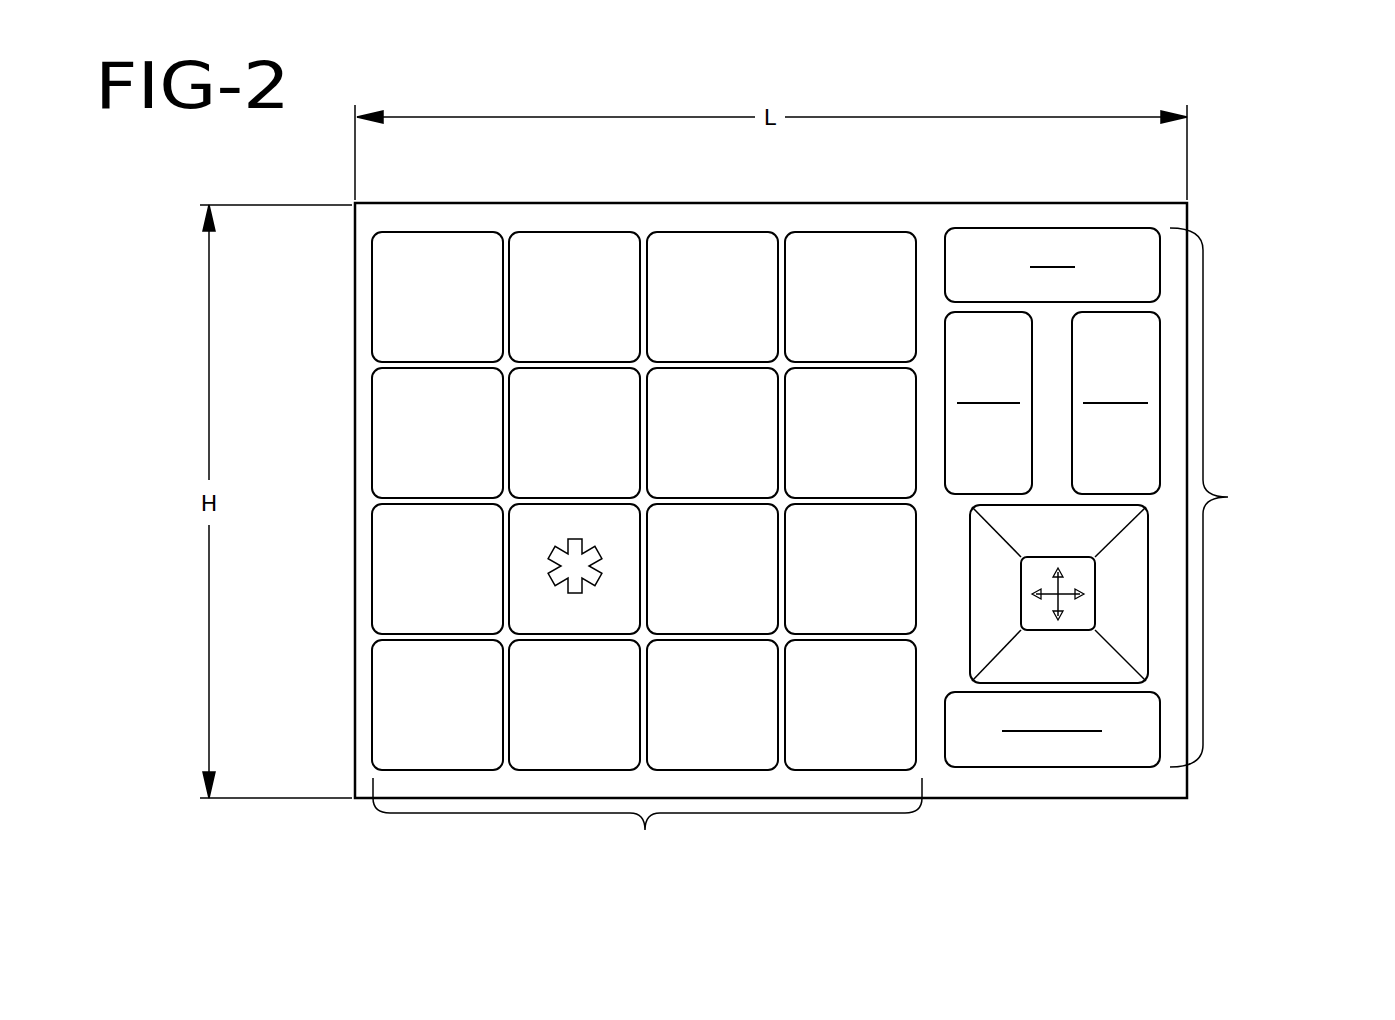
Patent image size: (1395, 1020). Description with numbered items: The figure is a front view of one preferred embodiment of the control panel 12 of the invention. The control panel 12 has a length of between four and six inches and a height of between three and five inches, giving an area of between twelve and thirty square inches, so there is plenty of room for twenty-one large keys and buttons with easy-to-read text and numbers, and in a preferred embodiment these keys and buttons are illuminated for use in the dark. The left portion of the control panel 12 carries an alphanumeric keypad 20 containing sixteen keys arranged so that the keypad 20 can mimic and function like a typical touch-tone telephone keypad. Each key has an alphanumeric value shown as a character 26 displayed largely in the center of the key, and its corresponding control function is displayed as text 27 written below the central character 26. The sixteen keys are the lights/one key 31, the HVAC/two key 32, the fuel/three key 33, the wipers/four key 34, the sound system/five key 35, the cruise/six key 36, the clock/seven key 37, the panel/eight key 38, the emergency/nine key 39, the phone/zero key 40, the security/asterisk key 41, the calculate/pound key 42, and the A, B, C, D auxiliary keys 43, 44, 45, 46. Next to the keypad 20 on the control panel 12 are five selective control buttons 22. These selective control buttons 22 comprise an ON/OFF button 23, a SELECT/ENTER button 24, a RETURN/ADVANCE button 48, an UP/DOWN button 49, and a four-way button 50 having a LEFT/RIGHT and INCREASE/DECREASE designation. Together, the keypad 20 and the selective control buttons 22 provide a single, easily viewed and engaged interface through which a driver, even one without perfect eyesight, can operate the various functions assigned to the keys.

The control panel 12 is at (950, 190).
The alphanumeric keypad 20 is at (647, 827).
The selective control buttons 22 is at (1220, 497).
The ON/OFF button 23 is at (1133, 266).
The SELECT/ENTER button 24 is at (1133, 730).
The character 26 is at (405, 566).
The text 27 is at (372, 634).
The LIGHTS/1 key 31 is at (438, 233).
The HVAC/2 key 32 is at (578, 233).
The FUEL/3 key 33 is at (715, 233).
The WIPERS/4 key 34 is at (850, 233).
The SOUND SYSTEM/5 key 35 is at (385, 398).
The CRUISE/6 key 36 is at (535, 382).
The CLOCK/7 key 37 is at (673, 382).
The PANEL/8 key 38 is at (900, 395).
The EMERGENCY/9 key 39 is at (374, 607).
The PHONE/0 key 40 is at (663, 523).
The SECURITY/* key 41 is at (527, 527).
The CALCULATE/# key 42 is at (900, 558).
The A auxiliary key 43 is at (440, 772).
The B auxiliary key 44 is at (578, 772).
The C auxiliary key 45 is at (715, 772).
The D auxiliary key 46 is at (852, 772).
The RETURN/ADVANCE button 48 is at (1018, 330).
The UP/DOWN button 49 is at (1140, 372).
The four-way button 50 is at (1140, 578).